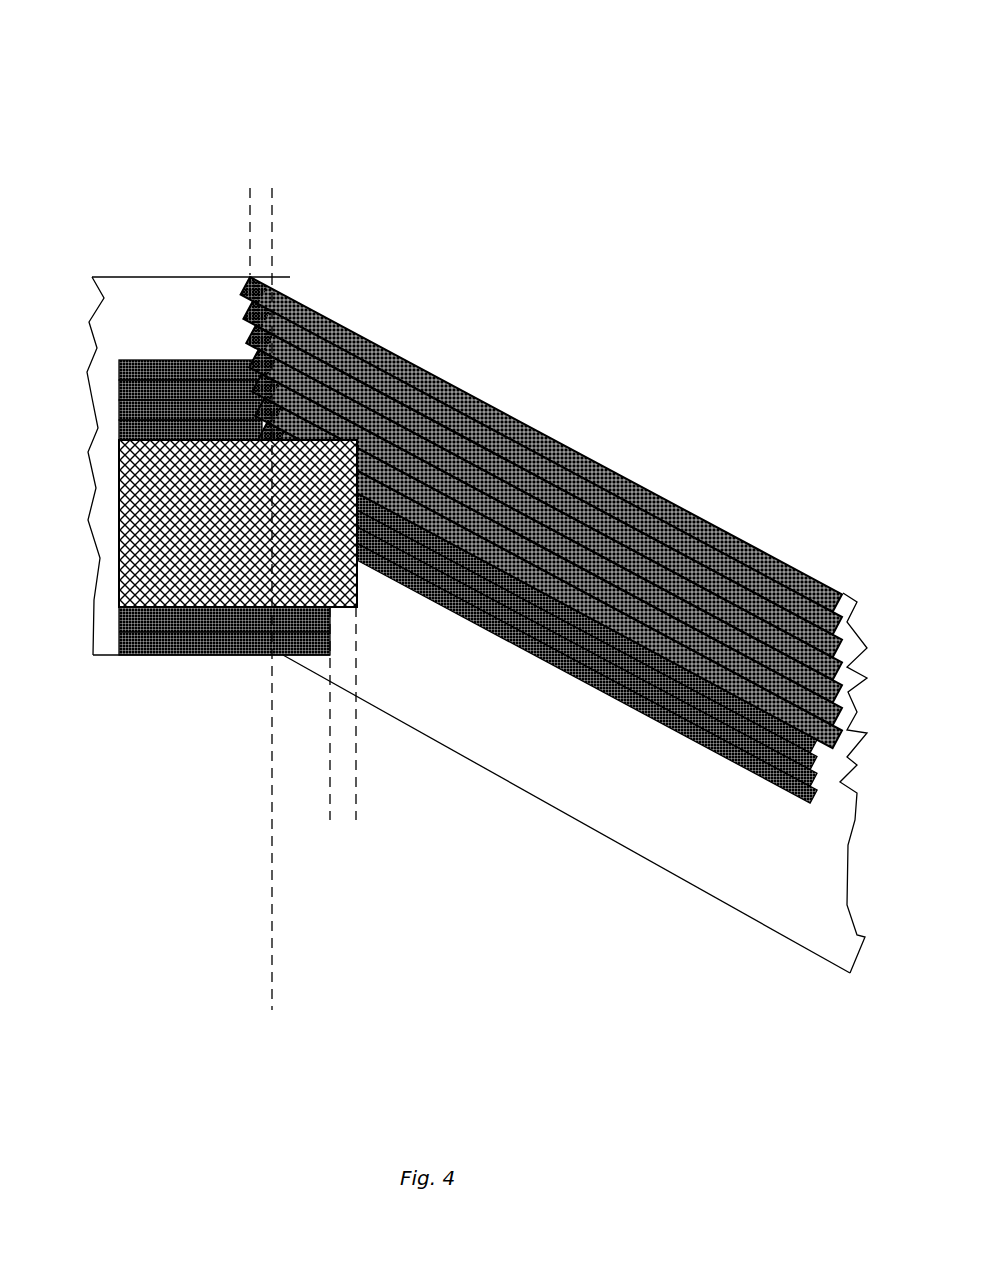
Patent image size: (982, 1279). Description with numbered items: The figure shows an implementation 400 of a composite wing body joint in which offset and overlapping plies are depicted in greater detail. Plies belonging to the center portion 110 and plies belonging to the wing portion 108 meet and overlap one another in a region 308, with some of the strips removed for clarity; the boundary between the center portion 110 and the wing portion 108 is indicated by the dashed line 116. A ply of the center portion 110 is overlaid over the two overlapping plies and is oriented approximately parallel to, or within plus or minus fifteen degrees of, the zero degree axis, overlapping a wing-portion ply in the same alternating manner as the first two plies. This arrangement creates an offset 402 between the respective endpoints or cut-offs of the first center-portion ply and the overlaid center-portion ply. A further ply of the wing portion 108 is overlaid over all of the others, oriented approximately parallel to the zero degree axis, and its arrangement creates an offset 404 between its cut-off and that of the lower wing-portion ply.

The implementation 400 is at (166, 80).
The offset 404 is at (259, 180).
The region 308 is at (317, 300).
The reference plane line 116 is at (262, 810).
The offset 402 is at (345, 820).
The center portion 110 is at (86, 985).
The wing portion 108 is at (446, 985).